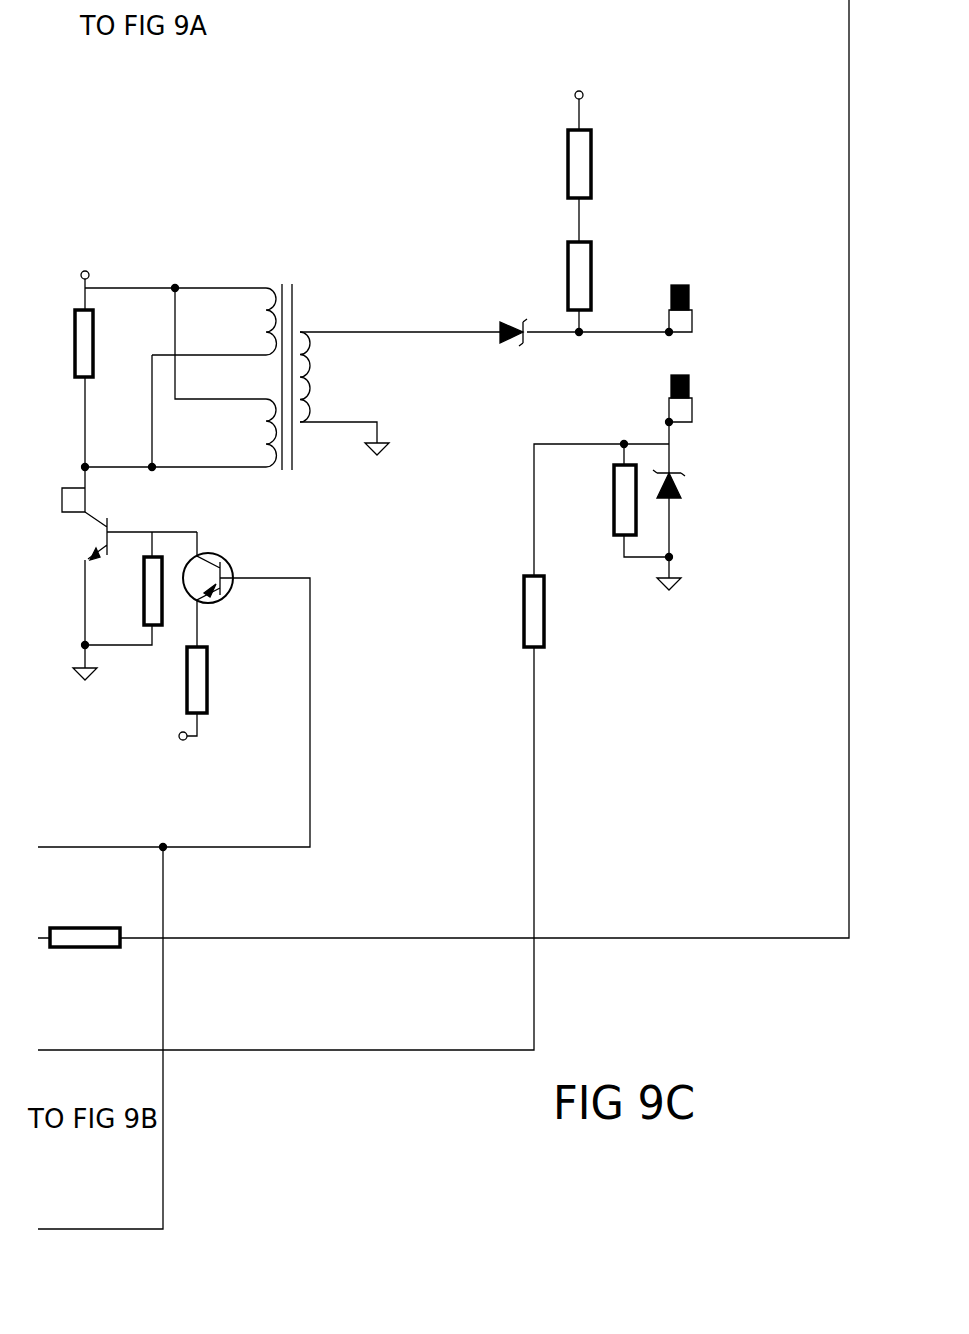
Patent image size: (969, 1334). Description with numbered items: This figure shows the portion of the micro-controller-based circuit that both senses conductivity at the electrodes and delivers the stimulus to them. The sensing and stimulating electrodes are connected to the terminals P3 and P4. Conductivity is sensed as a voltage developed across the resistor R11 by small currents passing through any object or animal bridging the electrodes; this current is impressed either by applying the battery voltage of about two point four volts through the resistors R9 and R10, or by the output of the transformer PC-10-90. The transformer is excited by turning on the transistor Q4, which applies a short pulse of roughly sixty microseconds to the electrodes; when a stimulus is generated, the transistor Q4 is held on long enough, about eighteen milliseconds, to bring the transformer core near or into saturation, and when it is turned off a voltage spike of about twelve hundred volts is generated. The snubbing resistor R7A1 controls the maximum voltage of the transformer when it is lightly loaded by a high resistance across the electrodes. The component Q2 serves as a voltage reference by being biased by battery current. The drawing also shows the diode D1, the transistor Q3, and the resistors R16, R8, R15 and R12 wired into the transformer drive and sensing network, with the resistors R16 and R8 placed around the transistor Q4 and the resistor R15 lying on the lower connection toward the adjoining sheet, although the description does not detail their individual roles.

The transformer PC-10-90 is at (291, 379).
The snubbing resistor R7A1 is at (110, 351).
The transistor P2T853 Q3 is at (122, 544).
The resistor 1k0 R16 is at (123, 588).
The transistor Q4 is at (292, 580).
The resistor 33R R8 is at (190, 696).
The resistor 33R R15 is at (85, 915).
The resistor R9 is at (561, 164).
The resistor R10 is at (537, 278).
The diode MMSZ52328 D1 is at (566, 330).
The terminal P3 is at (715, 300).
The terminal P4 is at (716, 479).
The resistor R11 is at (608, 501).
The voltage reference Q2 is at (743, 484).
The resistor 10k0 R12 is at (497, 611).